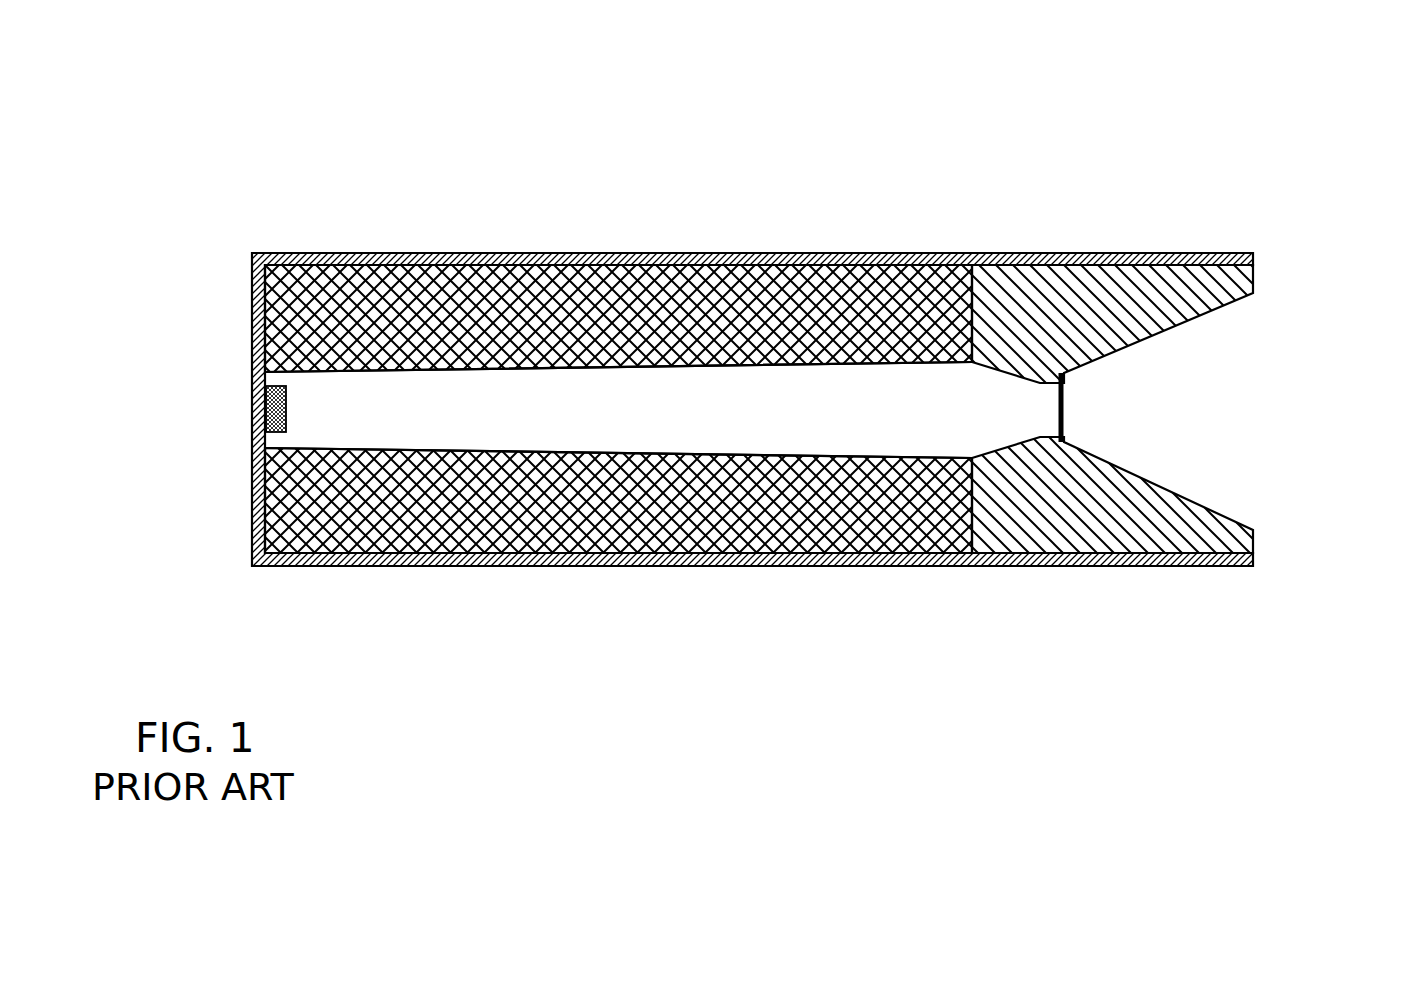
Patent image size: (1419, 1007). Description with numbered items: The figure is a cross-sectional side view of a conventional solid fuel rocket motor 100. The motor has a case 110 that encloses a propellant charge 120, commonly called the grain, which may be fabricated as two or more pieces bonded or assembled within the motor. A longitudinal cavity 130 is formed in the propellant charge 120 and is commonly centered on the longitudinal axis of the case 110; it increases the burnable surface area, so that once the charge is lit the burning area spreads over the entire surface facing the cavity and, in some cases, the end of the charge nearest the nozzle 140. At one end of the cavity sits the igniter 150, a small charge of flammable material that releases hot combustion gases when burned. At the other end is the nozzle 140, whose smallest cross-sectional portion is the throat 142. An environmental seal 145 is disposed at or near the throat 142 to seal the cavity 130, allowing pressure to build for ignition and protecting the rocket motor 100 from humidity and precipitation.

The solid fuel rocket motor 100 is at (734, 407).
The case 110 is at (1048, 253).
The propellant charge 120 is at (640, 300).
The longitudinal cavity 130 is at (643, 410).
The nozzle 140 is at (1173, 327).
The throat 142 is at (1040, 437).
The environmental seal 145 is at (1064, 408).
The igniter 150 is at (252, 410).